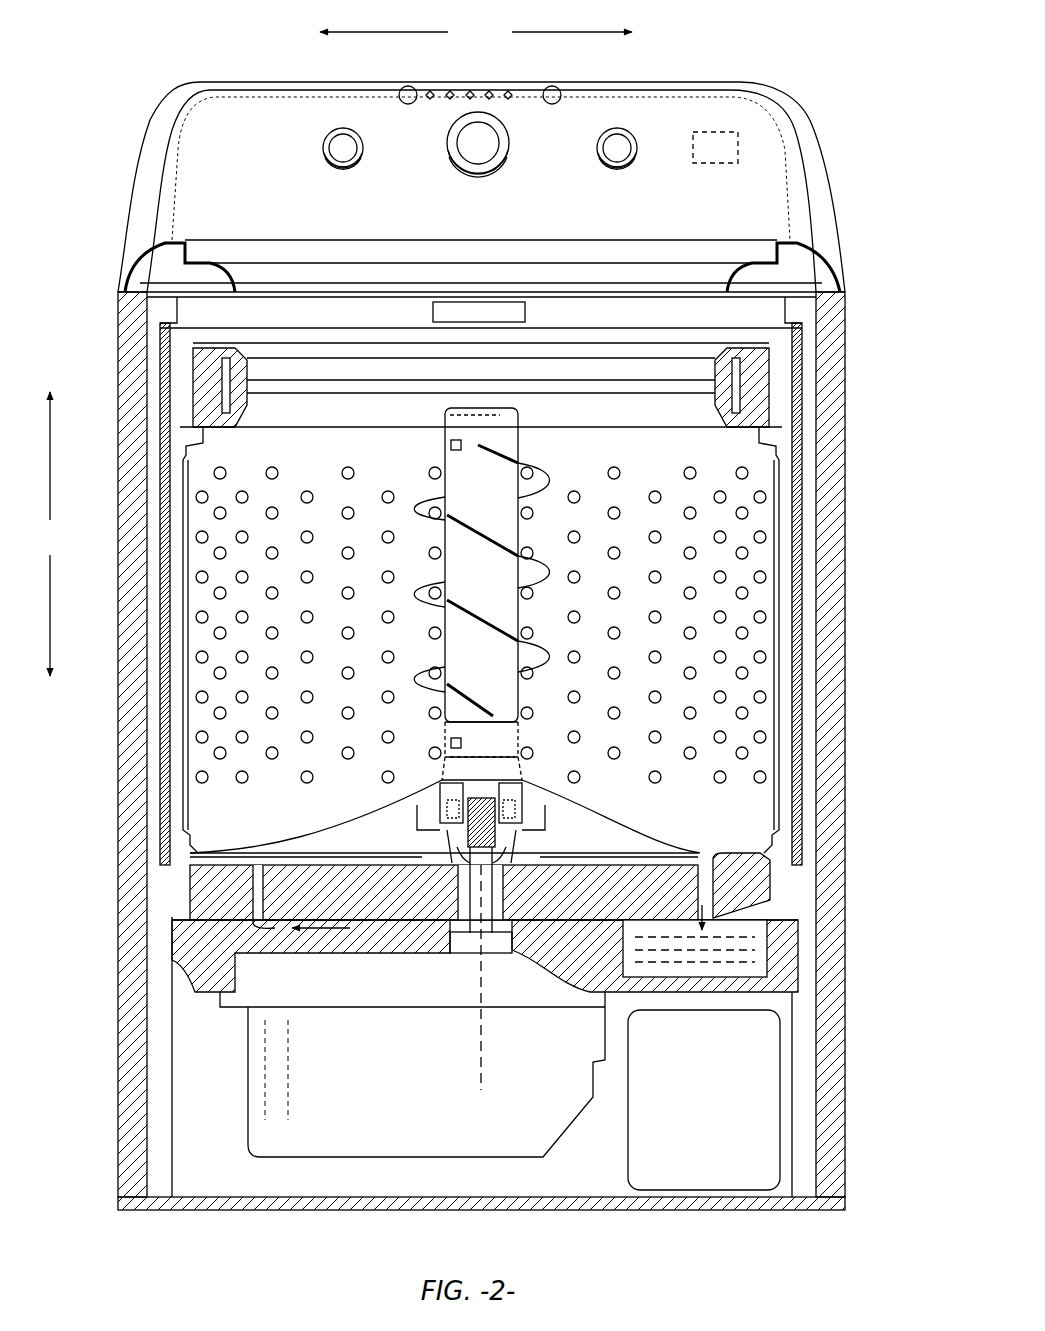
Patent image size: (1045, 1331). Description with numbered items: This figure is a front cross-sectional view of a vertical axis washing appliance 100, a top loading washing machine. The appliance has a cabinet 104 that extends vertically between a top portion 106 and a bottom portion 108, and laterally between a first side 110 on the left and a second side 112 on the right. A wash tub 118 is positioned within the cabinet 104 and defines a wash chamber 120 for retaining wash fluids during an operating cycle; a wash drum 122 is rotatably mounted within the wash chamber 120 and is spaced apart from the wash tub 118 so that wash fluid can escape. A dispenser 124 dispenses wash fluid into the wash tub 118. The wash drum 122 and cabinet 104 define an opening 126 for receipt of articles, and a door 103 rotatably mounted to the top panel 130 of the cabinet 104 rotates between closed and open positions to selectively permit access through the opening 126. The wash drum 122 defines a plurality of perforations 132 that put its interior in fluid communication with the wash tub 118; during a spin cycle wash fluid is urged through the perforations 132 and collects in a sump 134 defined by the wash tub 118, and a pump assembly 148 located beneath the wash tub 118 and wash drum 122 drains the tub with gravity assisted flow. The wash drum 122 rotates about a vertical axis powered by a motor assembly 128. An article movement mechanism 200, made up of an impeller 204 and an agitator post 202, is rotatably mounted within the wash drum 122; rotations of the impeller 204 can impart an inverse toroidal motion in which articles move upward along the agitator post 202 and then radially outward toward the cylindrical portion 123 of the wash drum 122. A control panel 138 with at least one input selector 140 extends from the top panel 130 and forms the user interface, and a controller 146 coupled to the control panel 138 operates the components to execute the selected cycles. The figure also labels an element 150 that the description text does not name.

The vertical axis washing appliance 100 is at (140, 78).
The door 103 is at (740, 250).
The cabinet 104 is at (489, 646).
The top portion 106 is at (856, 294).
The bottom portion 108 is at (850, 1188).
The first side 110 is at (110, 1012).
The second side 112 is at (852, 1015).
The wash tub 118 is at (804, 610).
The wash chamber 120 is at (478, 630).
The wash drum 122 is at (183, 775).
The cylindrical portion 123 is at (771, 556).
The dispenser 124 is at (485, 300).
The opening 126 is at (268, 325).
The motor assembly 128 is at (397, 1096).
The top panel 130 is at (800, 262).
The perforations 132 is at (243, 787).
The sump 134 is at (745, 930).
The control panel 138 is at (612, 113).
The input selector 140 is at (482, 141).
The controller 146 is at (721, 132).
The pump assembly 148 is at (729, 1113).
The basket bottom 150 is at (652, 840).
The article movement mechanism 200 is at (351, 634).
The agitator post 202 is at (468, 497).
The impeller 204 is at (363, 838).